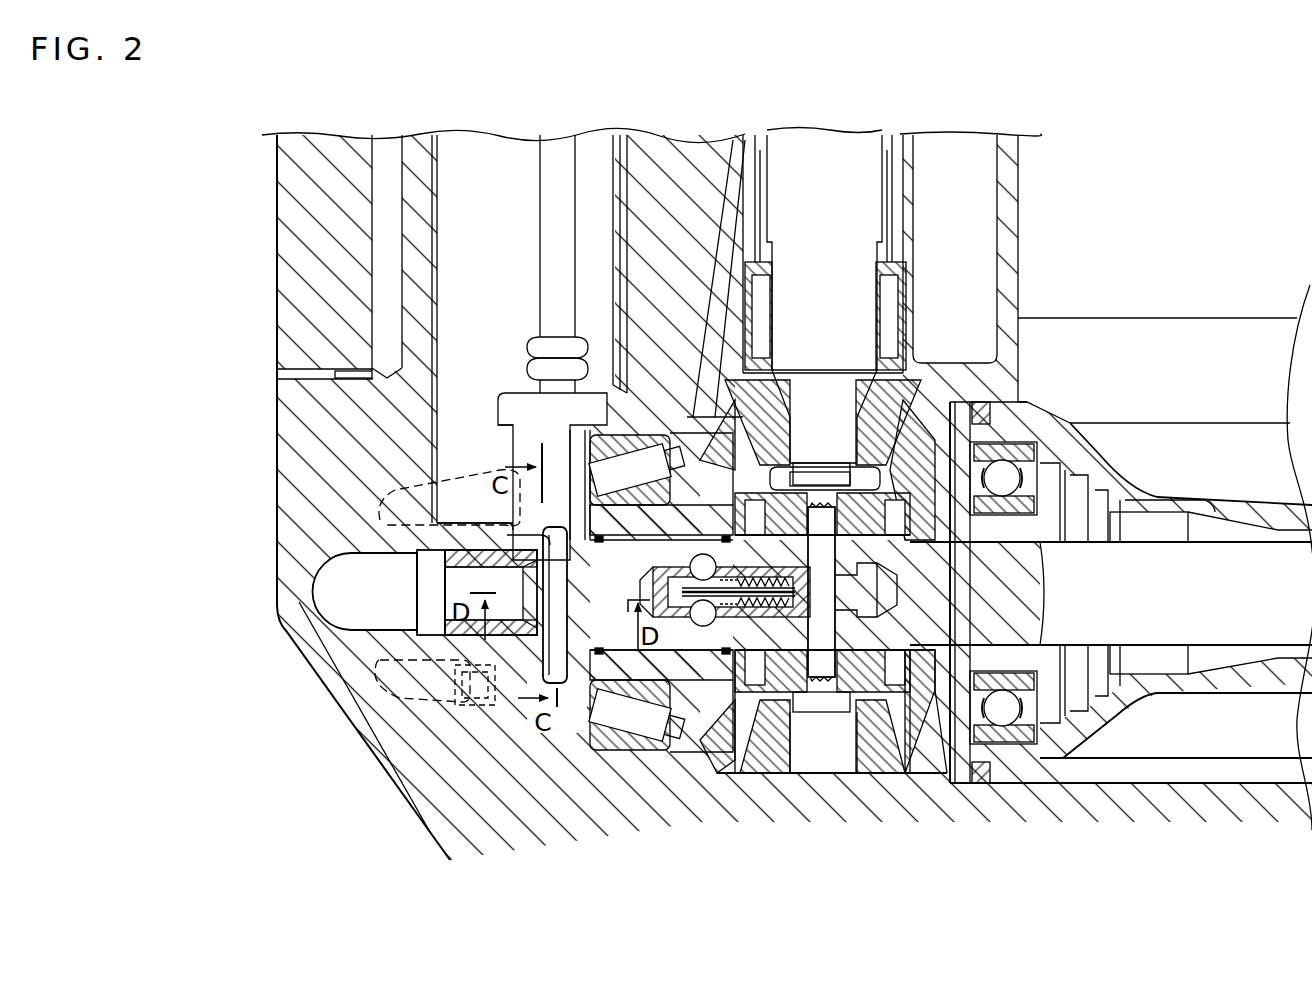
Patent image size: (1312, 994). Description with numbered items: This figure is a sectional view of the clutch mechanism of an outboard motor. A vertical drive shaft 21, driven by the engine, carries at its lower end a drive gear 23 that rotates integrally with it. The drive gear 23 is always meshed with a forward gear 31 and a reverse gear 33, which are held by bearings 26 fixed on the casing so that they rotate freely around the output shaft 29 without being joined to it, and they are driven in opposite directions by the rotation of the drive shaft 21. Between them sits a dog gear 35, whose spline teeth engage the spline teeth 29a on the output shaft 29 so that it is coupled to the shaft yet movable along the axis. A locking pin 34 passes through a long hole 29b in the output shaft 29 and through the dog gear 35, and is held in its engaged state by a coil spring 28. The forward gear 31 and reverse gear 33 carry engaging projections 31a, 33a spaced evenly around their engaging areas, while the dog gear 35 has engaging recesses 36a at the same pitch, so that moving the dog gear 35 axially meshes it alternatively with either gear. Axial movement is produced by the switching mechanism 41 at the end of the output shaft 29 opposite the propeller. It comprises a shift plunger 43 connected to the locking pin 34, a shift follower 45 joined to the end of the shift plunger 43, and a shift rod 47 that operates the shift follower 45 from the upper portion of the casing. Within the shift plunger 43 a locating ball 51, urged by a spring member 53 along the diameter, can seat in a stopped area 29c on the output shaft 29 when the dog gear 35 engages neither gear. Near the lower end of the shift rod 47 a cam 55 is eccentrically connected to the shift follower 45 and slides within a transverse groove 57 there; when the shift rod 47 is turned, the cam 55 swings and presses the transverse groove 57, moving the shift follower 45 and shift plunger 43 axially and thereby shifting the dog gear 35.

The drive shaft 21 is at (857, 188).
The drive gear 23 is at (938, 363).
The bearings 26 is at (622, 755).
The coil spring 28 is at (867, 680).
The output shaft 29 is at (1252, 623).
The spline teeth 29a is at (1040, 545).
The long hole 29b is at (818, 760).
The stopped area 29c is at (712, 540).
The forward gear 31 is at (775, 640).
The engaging projections 31a is at (748, 500).
The reverse gear 33 is at (938, 780).
The engaging projections 33a is at (870, 440).
The locking pin 34 is at (828, 700).
The dog gear 35 is at (900, 740).
The engaging recesses 36a is at (765, 490).
The switching mechanism 41 is at (452, 642).
The shift plunger 43 is at (752, 640).
The shift follower 45 is at (530, 700).
The shift rod 47 is at (510, 515).
The locating ball 51 is at (728, 655).
The spring member 53 is at (797, 600).
The cam 55 is at (440, 590).
The transverse groove 57 is at (468, 550).